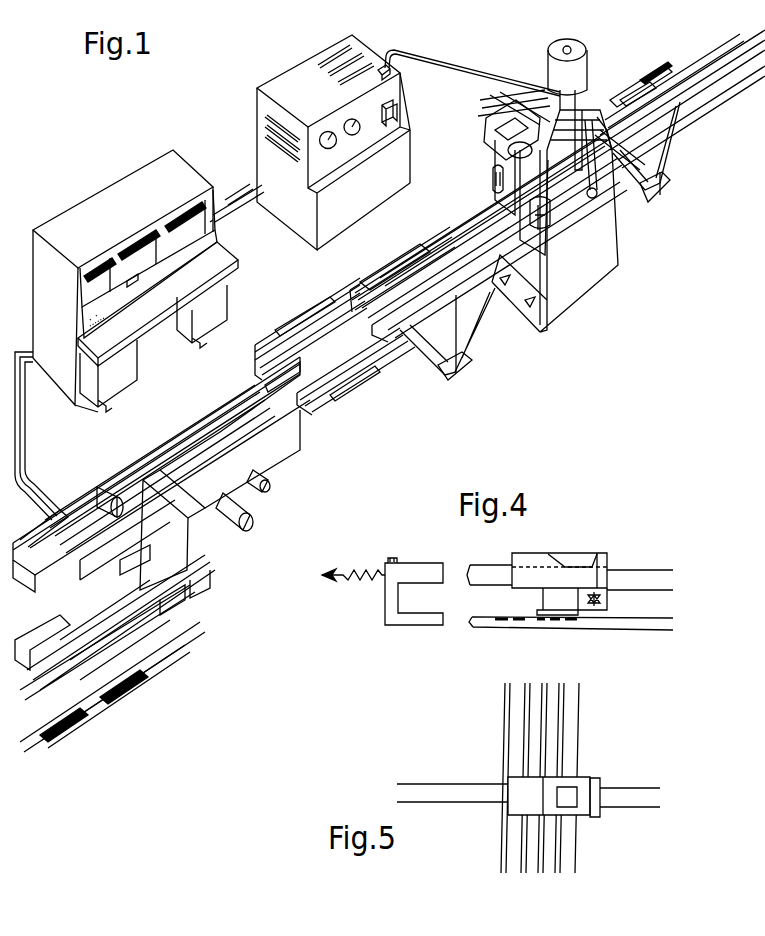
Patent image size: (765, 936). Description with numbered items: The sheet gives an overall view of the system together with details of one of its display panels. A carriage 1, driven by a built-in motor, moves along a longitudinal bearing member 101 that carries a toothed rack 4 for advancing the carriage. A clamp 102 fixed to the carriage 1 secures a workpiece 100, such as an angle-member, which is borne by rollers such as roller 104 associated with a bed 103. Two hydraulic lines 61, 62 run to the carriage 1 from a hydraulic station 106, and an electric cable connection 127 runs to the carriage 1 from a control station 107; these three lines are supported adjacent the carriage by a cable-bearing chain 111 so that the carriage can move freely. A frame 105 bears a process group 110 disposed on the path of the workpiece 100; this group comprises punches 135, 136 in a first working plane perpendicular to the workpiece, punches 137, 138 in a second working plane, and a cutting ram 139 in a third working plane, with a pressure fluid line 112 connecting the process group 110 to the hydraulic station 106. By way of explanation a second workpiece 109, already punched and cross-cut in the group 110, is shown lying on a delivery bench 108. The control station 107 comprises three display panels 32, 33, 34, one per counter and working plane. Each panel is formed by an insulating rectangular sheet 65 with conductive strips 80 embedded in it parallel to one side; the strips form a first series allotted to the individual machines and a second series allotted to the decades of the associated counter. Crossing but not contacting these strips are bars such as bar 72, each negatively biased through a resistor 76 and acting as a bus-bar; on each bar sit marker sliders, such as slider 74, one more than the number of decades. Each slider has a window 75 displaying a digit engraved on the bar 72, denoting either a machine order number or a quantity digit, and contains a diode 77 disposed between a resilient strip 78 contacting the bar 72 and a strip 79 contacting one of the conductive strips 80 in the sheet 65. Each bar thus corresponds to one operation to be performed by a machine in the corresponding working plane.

In FIG. 1, the carriage 1 is at (260, 475).
In FIG. 1, the toothed rack 4 is at (364, 370).
In FIG. 1, the display panel 32 is at (181, 223).
In FIG. 1, the display panel 33 is at (134, 247).
In FIG. 1, the display panel 34 is at (95, 272).
In FIG. 1, the hydraulic line 61 is at (46, 741).
In FIG. 1, the hydraulic line 62 is at (40, 732).
In FIG. 4, the insulating rectangular sheet 65 is at (661, 630).
In FIG. 4, the bar 72 is at (627, 582).
In FIG. 5, the bar 72 is at (630, 799).
In FIG. 4, the slider 74 is at (524, 558).
In FIG. 5, the slider 74 is at (598, 816).
In FIG. 4, the window 75 is at (573, 558).
In FIG. 5, the window 75 is at (582, 788).
In FIG. 4, the resistor 76 is at (369, 574).
In FIG. 4, the diode 77 is at (604, 595).
In FIG. 4, the resilient strip 78 is at (543, 589).
In FIG. 4, the strip 79 is at (552, 622).
In FIG. 4, the conductive strips 80 is at (522, 622).
In FIG. 5, the conductive strips 80 is at (532, 732).
In FIG. 1, the workpiece 100 is at (408, 270).
In FIG. 1, the longitudinal bearing member 101 is at (318, 396).
In FIG. 1, the clamp 102 is at (286, 356).
In FIG. 1, the bed 103 is at (127, 466).
In FIG. 1, the roller 104 is at (368, 293).
In FIG. 1, the frame 105 is at (602, 254).
In FIG. 1, the hydraulic station 106 is at (352, 37).
In FIG. 1, the control station 107 is at (95, 200).
In FIG. 1, the delivery bench 108 is at (685, 98).
In FIG. 1, the workpiece 109 is at (636, 82).
In FIG. 1, the process group 110 is at (496, 182).
In FIG. 1, the cable-bearing chain 111 is at (150, 656).
In FIG. 1, the pressure fluid line 112 is at (451, 75).
In FIG. 1, the electric cable connection 127 is at (53, 496).
In FIG. 1, the punch 135 is at (488, 146).
In FIG. 1, the punch 136 is at (558, 200).
In FIG. 1, the punch 137 is at (586, 200).
In FIG. 1, the punch 138 is at (484, 122).
In FIG. 1, the cutting ram 139 is at (590, 104).